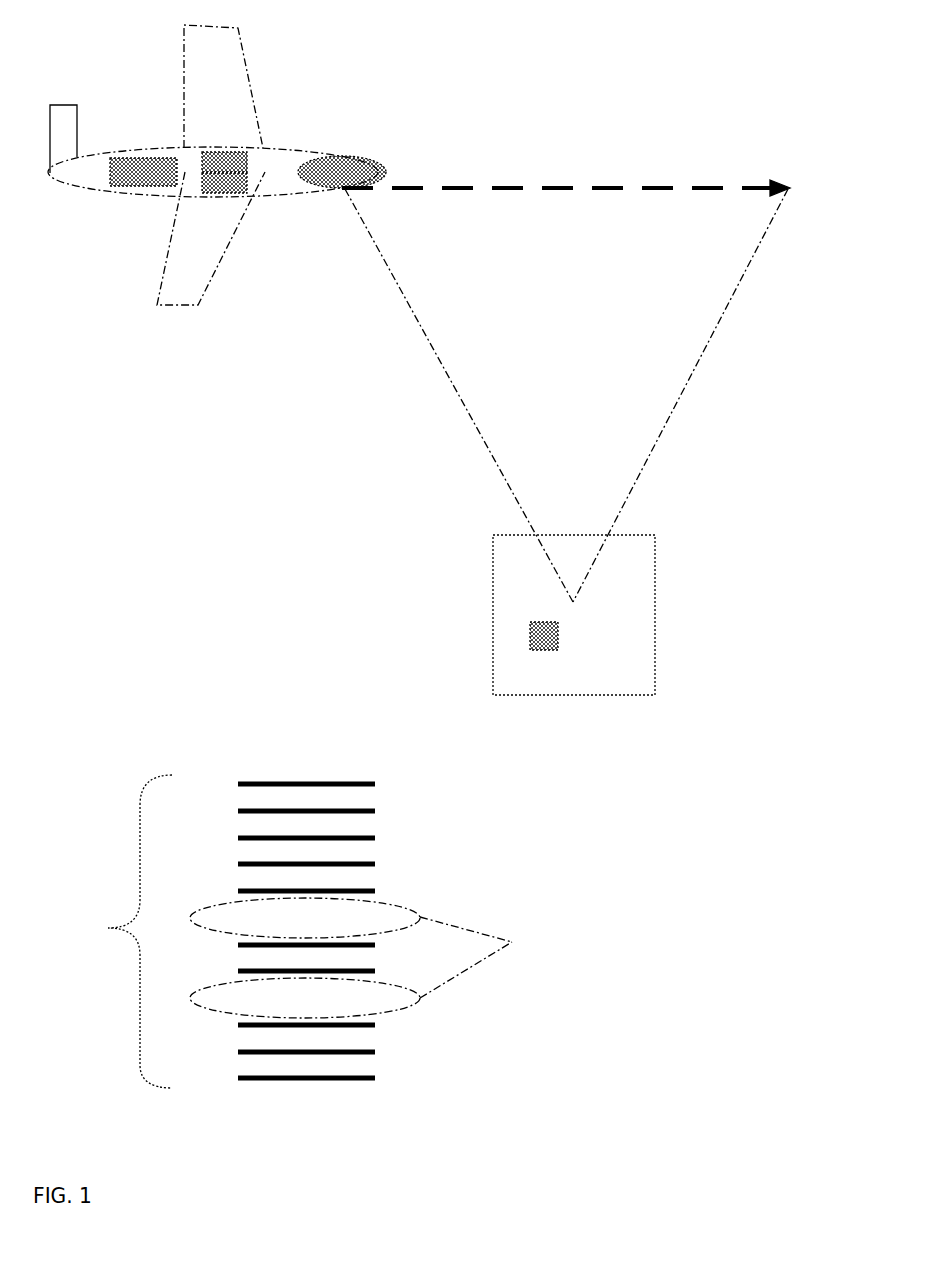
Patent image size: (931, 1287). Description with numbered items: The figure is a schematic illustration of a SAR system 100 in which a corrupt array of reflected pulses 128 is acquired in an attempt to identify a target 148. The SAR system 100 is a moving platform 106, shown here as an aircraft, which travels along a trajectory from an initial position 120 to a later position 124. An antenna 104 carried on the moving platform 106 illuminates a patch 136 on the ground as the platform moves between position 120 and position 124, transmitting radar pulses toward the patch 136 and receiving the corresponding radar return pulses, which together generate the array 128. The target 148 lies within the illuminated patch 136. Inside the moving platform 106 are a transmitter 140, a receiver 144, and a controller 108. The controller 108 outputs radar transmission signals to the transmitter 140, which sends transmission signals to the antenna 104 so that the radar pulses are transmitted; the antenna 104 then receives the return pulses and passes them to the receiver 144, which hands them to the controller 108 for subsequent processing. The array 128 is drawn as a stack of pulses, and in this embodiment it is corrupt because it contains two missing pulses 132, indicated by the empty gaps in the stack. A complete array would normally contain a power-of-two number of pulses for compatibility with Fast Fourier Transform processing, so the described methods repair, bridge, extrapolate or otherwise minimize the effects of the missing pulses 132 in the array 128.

The SAR system 100 is at (128, 467).
The antenna 104 is at (367, 158).
The moving platform 106 is at (80, 190).
The controller 108 is at (128, 157).
The position 120 is at (342, 192).
The position 124 is at (788, 187).
The corrupt array of reflected pulses 128 is at (108, 928).
The missing pulses 132 is at (652, 930).
The patch 136 is at (655, 617).
The transmitter 140 is at (230, 160).
The receiver 144 is at (227, 187).
The target 148 is at (550, 648).